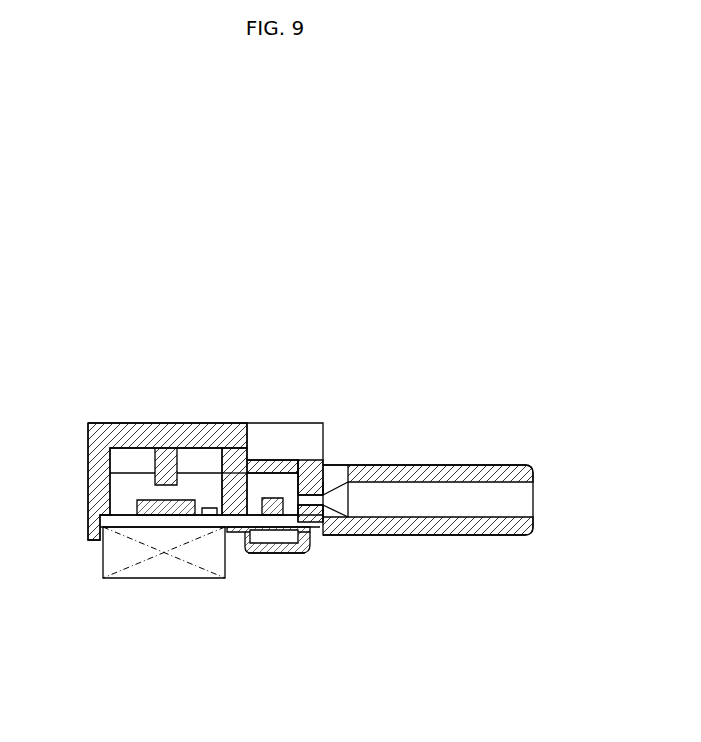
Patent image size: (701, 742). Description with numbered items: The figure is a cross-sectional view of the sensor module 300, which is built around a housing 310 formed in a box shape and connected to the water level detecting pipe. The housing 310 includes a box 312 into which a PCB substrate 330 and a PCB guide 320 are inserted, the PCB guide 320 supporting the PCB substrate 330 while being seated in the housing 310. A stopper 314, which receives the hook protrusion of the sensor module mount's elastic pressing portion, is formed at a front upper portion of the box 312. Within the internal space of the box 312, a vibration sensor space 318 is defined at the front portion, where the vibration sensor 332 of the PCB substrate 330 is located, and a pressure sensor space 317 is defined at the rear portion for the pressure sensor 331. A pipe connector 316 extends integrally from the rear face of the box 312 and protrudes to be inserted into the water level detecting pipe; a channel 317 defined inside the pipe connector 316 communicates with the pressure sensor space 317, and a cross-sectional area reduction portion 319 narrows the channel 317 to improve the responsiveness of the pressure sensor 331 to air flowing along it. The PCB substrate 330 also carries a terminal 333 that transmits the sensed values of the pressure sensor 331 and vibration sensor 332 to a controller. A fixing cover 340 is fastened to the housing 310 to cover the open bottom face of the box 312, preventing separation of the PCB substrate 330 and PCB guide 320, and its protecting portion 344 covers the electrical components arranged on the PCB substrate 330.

The sensor module 300 is at (64, 331).
The housing 310 is at (213, 421).
The box 312 is at (157, 423).
The stopper 314 is at (98, 423).
The pipe connector 316 is at (462, 470).
The pressure sensor space / channel 317 is at (276, 480).
The vibration sensor space 318 is at (126, 490).
The cross-sectional area reduction portion 319 is at (347, 489).
The PCB guide 320 is at (250, 492).
The PCB substrate 330 is at (243, 532).
The pressure sensor 331 is at (296, 528).
The vibration sensor 332 is at (147, 503).
The terminal 333 is at (165, 580).
The fixing cover 340 is at (289, 557).
The protecting portion 344 is at (263, 553).